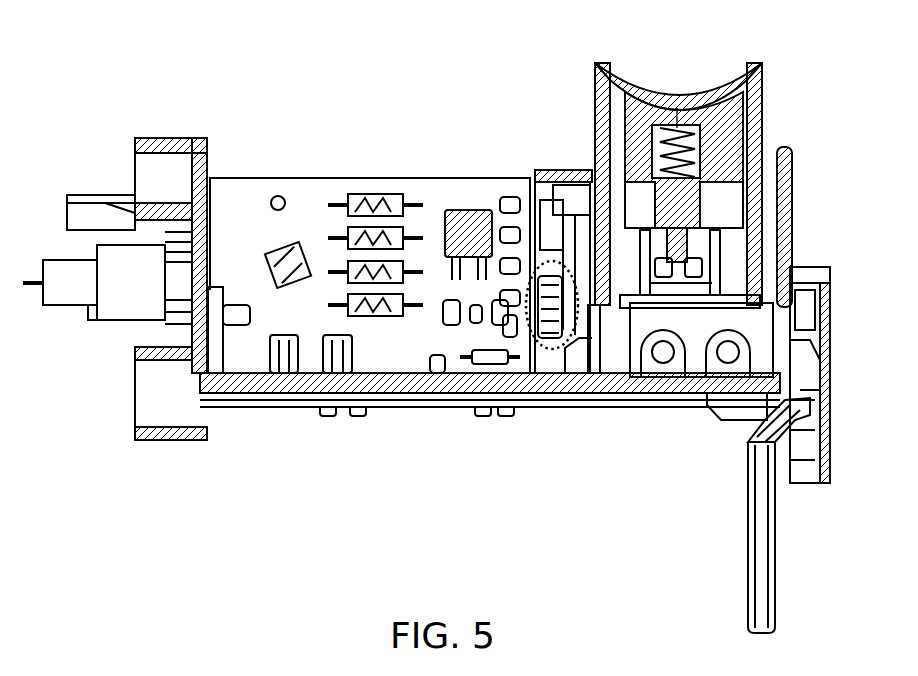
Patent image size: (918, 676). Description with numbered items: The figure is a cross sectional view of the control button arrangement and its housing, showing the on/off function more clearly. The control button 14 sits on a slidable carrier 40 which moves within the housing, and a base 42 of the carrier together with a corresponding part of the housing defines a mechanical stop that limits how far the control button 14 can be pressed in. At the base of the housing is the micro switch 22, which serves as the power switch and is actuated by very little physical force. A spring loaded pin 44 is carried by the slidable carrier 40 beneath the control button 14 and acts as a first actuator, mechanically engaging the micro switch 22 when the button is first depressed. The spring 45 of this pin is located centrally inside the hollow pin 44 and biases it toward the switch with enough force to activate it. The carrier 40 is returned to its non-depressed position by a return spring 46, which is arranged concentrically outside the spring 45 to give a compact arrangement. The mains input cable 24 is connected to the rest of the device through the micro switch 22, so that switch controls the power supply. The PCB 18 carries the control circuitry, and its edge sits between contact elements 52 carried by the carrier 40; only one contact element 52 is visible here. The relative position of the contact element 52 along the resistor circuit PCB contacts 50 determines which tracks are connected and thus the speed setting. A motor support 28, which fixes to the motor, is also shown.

The control button 14 is at (635, 88).
The PCB 18 is at (367, 178).
The micro switch 22 is at (688, 327).
The mains input cable 24 is at (775, 535).
The motor support 28 is at (205, 420).
The slidable carrier 40 is at (715, 130).
The base of the carrier 42 is at (602, 307).
The spring loaded pin 44 is at (682, 242).
The spring 45 is at (677, 130).
The return spring 46 is at (713, 263).
The resistor circuit PCB contacts 50 is at (547, 347).
The contact element 52 is at (552, 222).